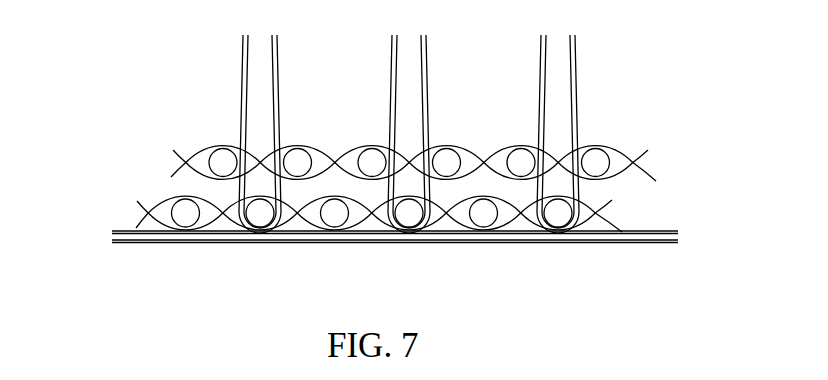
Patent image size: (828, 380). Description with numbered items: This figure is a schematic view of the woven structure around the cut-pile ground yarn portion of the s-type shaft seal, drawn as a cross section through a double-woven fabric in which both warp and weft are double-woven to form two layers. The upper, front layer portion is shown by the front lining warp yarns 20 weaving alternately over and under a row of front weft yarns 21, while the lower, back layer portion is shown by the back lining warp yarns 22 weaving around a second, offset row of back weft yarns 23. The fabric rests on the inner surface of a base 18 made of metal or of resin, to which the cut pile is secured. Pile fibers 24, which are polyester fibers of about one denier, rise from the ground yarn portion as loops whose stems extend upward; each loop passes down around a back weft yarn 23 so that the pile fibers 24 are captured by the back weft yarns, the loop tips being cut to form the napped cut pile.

The backing layer 18 is at (228, 242).
The first weave yarns 20 is at (173, 152).
The upper warp yarns 21 is at (601, 157).
The second weave yarns 22 is at (143, 203).
The lower warp yarns 23 is at (560, 217).
The pile fibers 24 is at (241, 100).